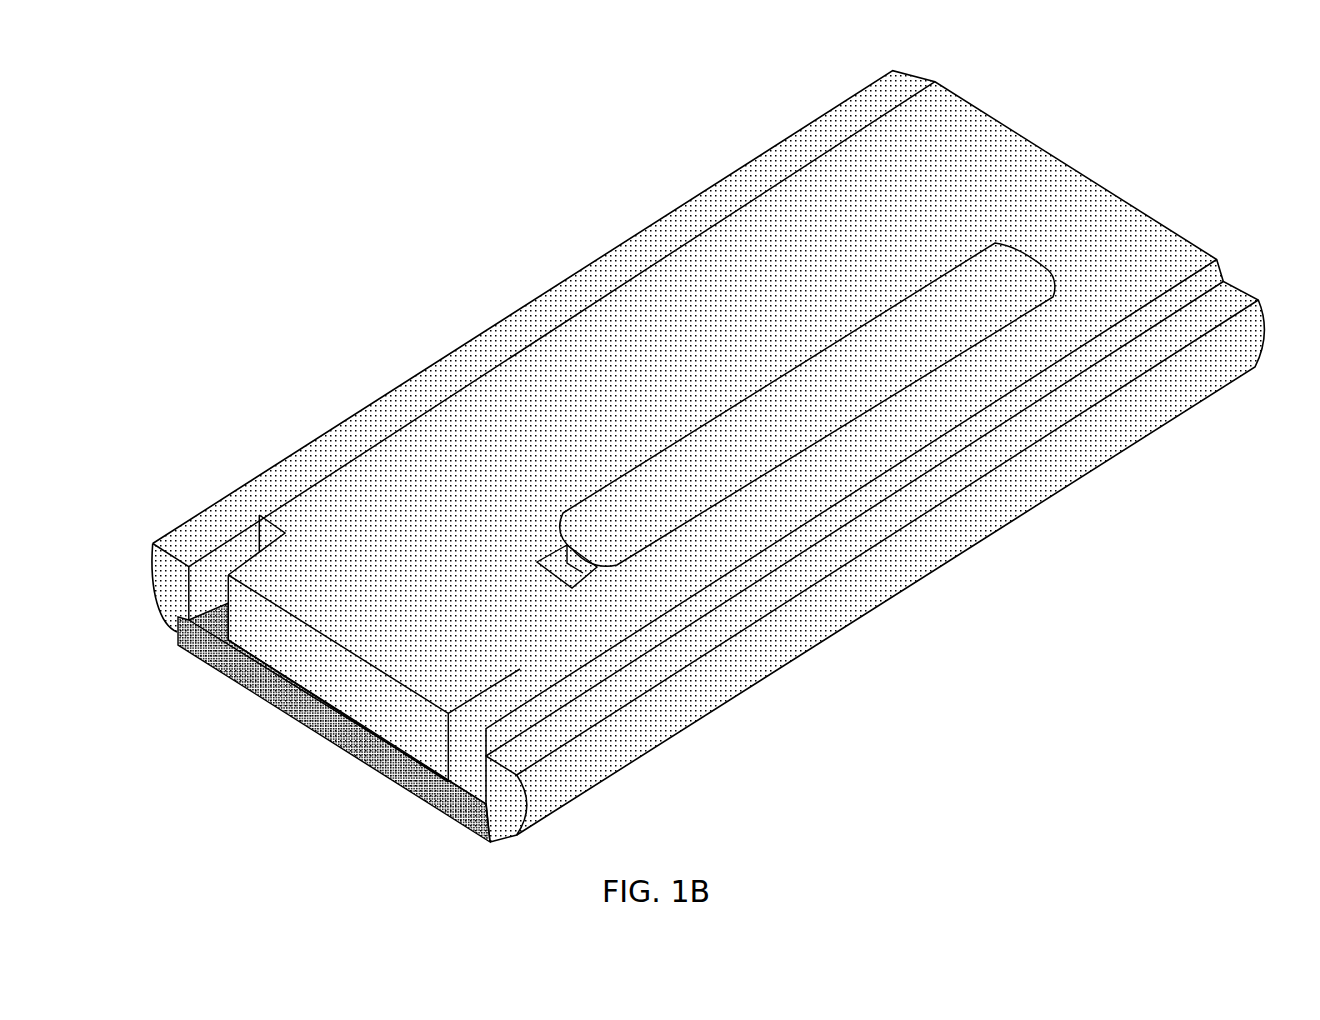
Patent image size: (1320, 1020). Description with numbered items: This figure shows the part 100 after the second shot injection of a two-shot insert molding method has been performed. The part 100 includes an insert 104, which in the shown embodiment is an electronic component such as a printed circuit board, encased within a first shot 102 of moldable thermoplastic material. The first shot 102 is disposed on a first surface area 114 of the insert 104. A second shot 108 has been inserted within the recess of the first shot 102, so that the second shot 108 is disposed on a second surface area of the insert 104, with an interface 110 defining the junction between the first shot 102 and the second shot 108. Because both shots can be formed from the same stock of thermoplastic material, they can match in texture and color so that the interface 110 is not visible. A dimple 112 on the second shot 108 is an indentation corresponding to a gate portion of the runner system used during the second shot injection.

The part 100 is at (341, 88).
The first shot 102 is at (872, 610).
The insert 104 is at (342, 708).
The second shot 108 is at (812, 433).
The interface 110 is at (800, 362).
The dimple 112 is at (545, 553).
The first surface area 114 is at (307, 727).